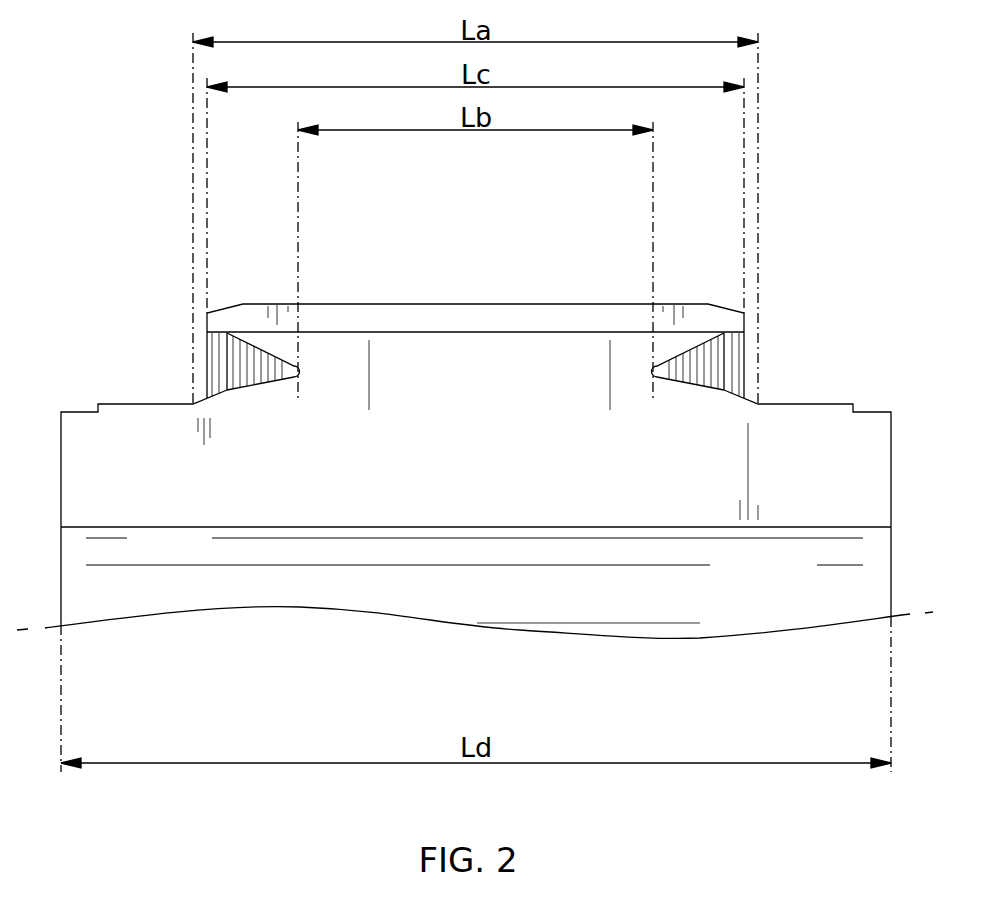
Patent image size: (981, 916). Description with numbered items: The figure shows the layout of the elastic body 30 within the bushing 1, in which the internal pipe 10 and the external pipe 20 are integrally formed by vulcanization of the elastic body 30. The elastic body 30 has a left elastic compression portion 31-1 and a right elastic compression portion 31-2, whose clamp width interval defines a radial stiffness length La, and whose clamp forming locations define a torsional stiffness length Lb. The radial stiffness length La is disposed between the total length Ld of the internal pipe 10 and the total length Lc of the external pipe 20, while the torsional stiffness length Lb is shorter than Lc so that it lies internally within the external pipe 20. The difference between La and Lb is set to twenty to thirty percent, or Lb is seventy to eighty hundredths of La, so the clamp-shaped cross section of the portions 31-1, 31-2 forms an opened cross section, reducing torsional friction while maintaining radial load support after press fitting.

The bushing 1 is at (136, 300).
The internal pipe 10 is at (165, 468).
The external pipe 20 is at (373, 318).
The elastic body 30 is at (511, 357).
The left elastic compression portion 31-1 is at (263, 363).
The right elastic compression portion 31-2 is at (690, 363).